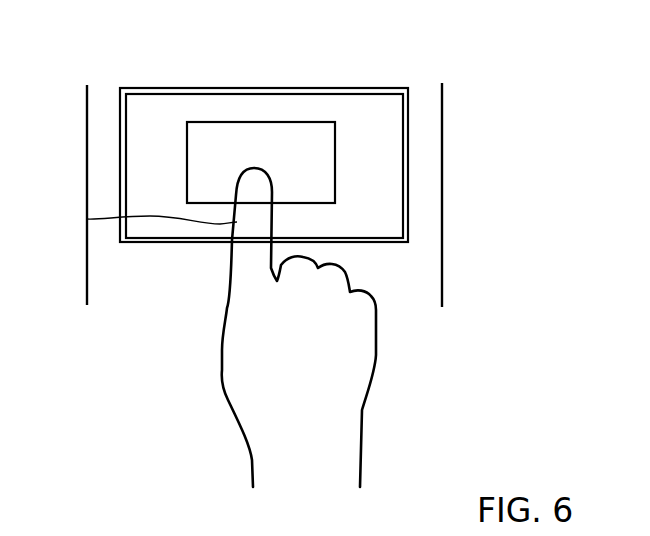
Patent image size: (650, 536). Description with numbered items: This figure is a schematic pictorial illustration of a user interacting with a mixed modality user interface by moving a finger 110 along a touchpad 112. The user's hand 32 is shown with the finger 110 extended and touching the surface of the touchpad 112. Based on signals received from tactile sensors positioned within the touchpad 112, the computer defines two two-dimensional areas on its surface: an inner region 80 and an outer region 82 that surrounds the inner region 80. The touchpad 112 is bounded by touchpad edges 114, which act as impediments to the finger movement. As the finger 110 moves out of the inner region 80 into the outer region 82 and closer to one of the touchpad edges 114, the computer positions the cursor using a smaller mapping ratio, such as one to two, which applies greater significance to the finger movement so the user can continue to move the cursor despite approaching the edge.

The hand 32 is at (222, 378).
The inner region 80 is at (317, 133).
The outer region 82 is at (238, 110).
The finger 110 is at (86, 219).
The touchpad 112 is at (442, 112).
The touchpad edges 114 is at (180, 88).